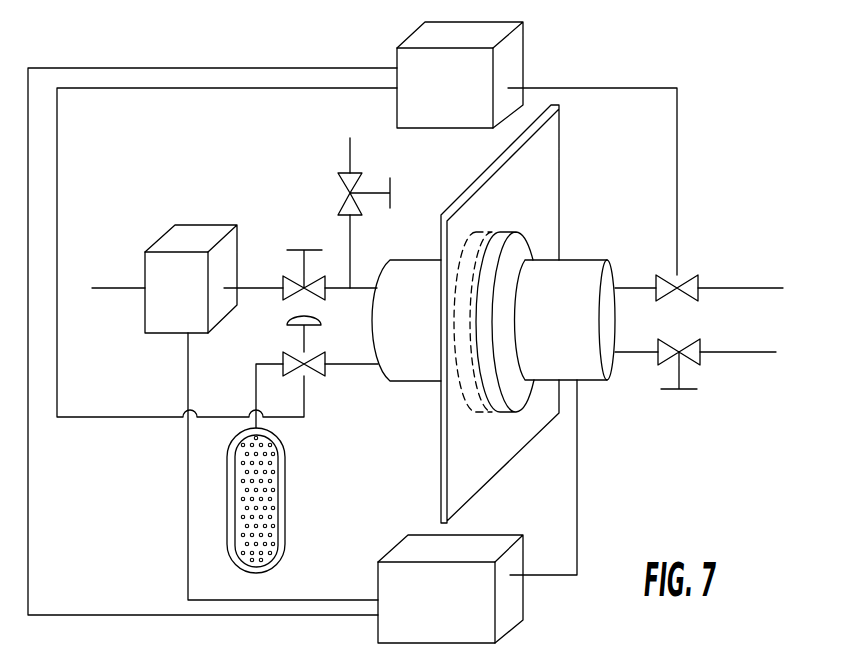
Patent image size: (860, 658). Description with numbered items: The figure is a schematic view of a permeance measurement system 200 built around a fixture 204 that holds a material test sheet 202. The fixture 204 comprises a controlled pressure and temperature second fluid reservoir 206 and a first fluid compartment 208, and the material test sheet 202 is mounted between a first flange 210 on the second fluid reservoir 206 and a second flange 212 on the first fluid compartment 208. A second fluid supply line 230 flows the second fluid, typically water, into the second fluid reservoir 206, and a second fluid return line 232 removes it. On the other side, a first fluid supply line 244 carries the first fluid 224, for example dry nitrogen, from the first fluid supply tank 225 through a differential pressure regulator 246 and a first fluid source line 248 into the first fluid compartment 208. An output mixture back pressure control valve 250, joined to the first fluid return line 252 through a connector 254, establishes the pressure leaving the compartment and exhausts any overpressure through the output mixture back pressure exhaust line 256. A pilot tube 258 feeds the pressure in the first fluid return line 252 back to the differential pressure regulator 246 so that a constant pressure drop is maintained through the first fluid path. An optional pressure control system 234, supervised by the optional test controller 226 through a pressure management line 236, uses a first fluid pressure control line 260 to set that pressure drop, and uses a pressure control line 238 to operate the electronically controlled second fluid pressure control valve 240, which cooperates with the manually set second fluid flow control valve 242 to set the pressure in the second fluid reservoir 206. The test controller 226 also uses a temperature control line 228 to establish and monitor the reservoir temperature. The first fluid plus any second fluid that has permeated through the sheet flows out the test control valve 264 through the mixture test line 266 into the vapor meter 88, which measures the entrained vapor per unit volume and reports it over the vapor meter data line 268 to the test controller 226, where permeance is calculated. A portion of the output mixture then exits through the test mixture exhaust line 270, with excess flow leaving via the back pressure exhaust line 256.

The permeance measurement system 200 is at (757, 128).
The material test sheet 202 is at (560, 172).
The fixture 204 is at (576, 251).
The second fluid reservoir 206 is at (609, 383).
The first fluid compartment 208 is at (413, 382).
The first flange 210 is at (514, 414).
The second flange 212 is at (476, 414).
The first fluid 224 is at (254, 503).
The first fluid supply tank 225 is at (285, 537).
The test controller 226 is at (505, 628).
The temperature control line 228 is at (578, 545).
The second fluid supply line 230 is at (750, 288).
The second fluid return line 232 is at (733, 353).
The pressure control system 234 is at (525, 58).
The pressure management line 236 is at (216, 68).
The pressure control line 238 is at (680, 100).
The second fluid pressure control valve 240 is at (697, 275).
The second fluid flow control valve 242 is at (700, 364).
The first fluid supply line 244 is at (255, 394).
The differential pressure regulator 246 is at (311, 378).
The first fluid source line 248 is at (343, 365).
The output mixture back pressure control valve 250 is at (353, 187).
The first fluid return line 252 is at (366, 283).
The connector 254 is at (347, 222).
The output mixture back pressure exhaust line 256 is at (350, 148).
The pilot tube 258 is at (322, 315).
The first fluid pressure control line 260 is at (221, 90).
The test control valve 264 is at (283, 282).
The mixture test line 266 is at (247, 290).
The vapor meter data line 268 is at (188, 528).
The test mixture exhaust line 270 is at (120, 288).
The vapor meter 88 is at (160, 242).